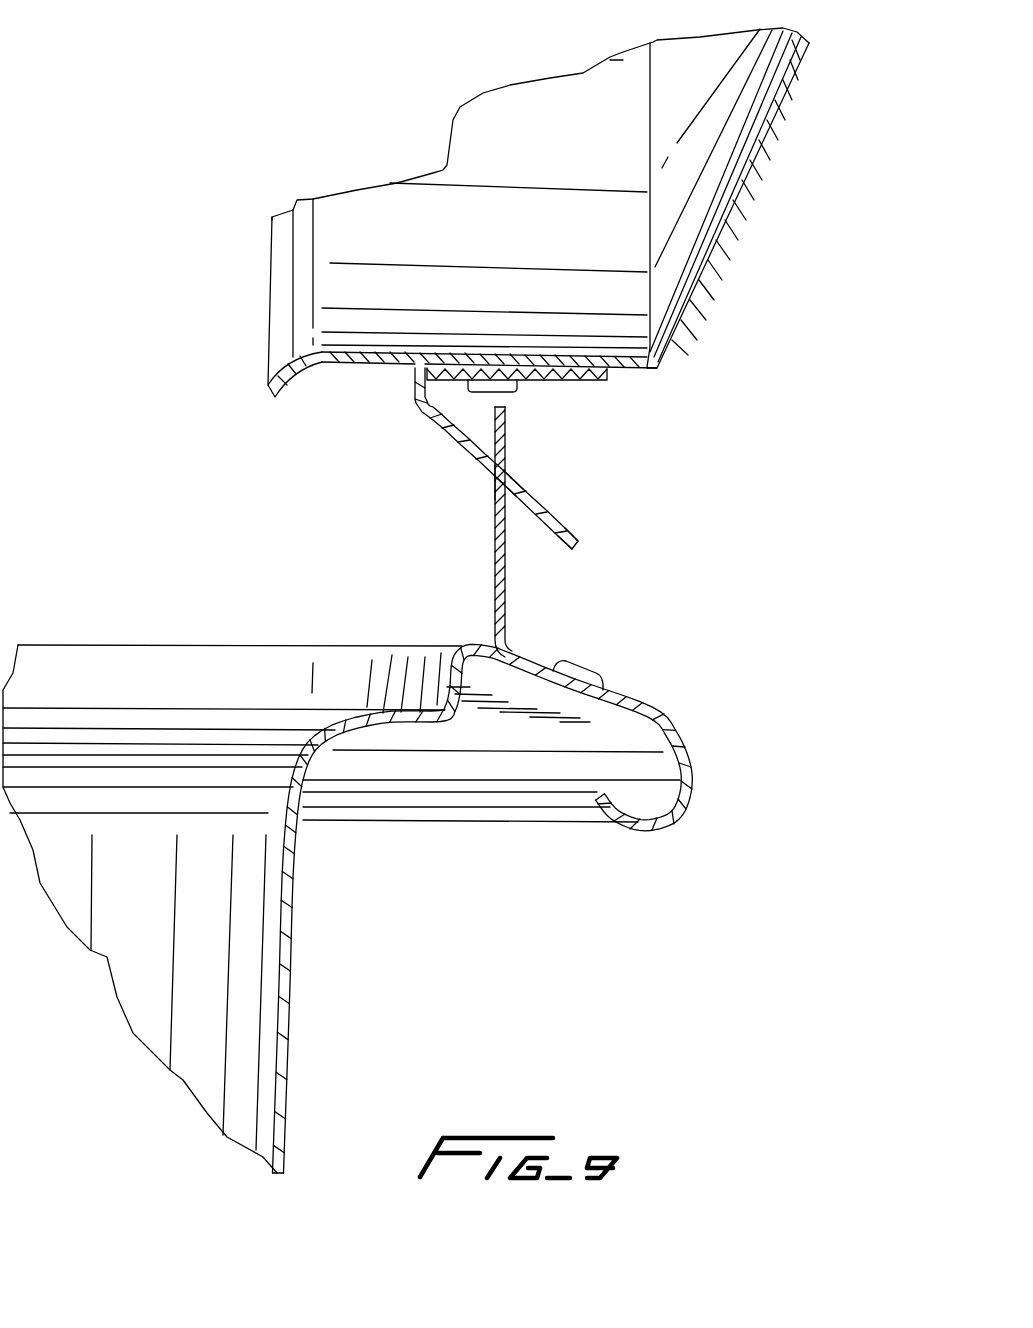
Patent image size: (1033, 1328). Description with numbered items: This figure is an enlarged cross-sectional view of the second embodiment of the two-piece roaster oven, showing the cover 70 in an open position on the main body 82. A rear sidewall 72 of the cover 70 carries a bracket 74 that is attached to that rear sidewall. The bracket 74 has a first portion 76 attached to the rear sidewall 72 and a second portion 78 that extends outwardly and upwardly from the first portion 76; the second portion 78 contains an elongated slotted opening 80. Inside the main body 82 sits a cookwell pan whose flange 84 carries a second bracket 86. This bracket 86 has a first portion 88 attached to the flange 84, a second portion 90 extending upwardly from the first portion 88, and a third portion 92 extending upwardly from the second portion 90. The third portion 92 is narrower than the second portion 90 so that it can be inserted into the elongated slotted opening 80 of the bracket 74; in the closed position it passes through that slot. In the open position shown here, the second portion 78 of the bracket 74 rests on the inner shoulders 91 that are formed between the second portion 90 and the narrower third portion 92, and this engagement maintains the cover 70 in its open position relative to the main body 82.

The cover 70 is at (705, 237).
The rear sidewall 72 is at (380, 352).
The bracket 74 is at (552, 520).
The first portion 76 is at (520, 370).
The second portion 78 is at (428, 413).
The elongated slotted opening 80 is at (505, 475).
The main body 82 is at (285, 1048).
The flange 84 is at (657, 815).
The bracket 86 is at (578, 665).
The first portion 88 is at (628, 705).
The second portion 90 is at (497, 600).
The inner shoulders 91 is at (497, 488).
The third portion 92 is at (505, 410).